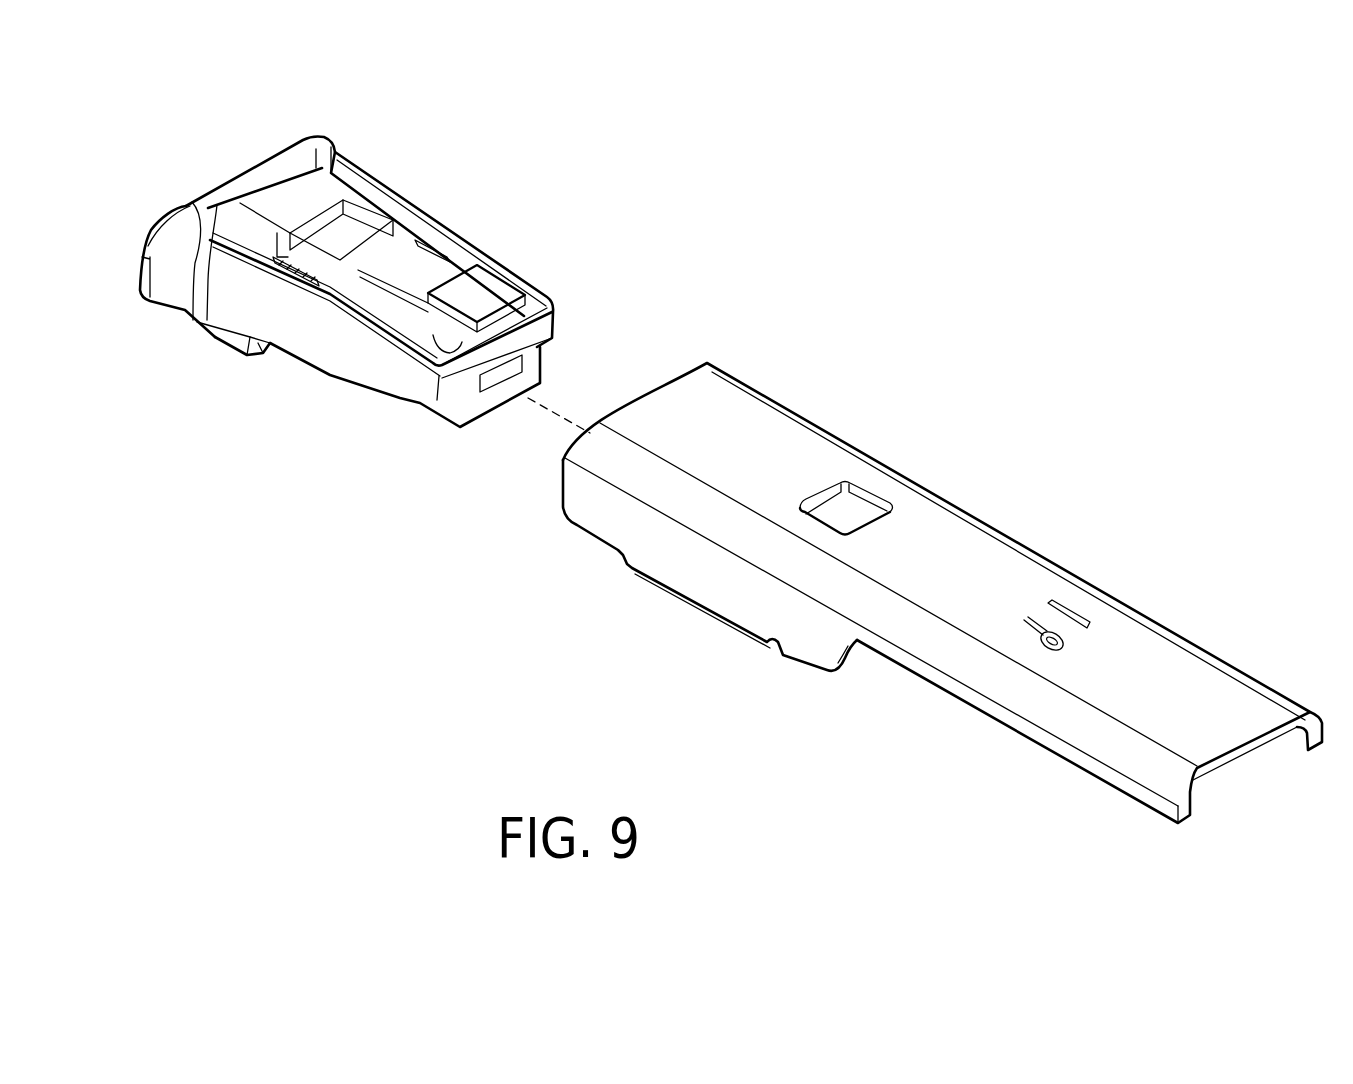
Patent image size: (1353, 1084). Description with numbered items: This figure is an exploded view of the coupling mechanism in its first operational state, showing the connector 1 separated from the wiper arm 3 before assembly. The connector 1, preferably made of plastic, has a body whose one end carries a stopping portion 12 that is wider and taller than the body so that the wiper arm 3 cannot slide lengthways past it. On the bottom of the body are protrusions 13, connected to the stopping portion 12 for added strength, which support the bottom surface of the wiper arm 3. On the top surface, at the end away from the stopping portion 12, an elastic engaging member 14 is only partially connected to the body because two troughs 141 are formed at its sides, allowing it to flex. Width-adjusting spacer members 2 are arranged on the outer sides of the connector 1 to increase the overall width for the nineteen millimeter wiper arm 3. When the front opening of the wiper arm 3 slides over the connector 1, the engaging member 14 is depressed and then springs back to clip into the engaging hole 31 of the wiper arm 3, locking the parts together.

The connector 1 is at (214, 170).
The width-adjusting spacer member 2 is at (406, 211).
The stopping portion 12 is at (167, 233).
The protrusion 13 is at (240, 335).
The engaging member 14 is at (485, 285).
The trough 141 is at (443, 258).
The wiper arm 3 is at (1020, 528).
The engaging hole 31 is at (870, 502).